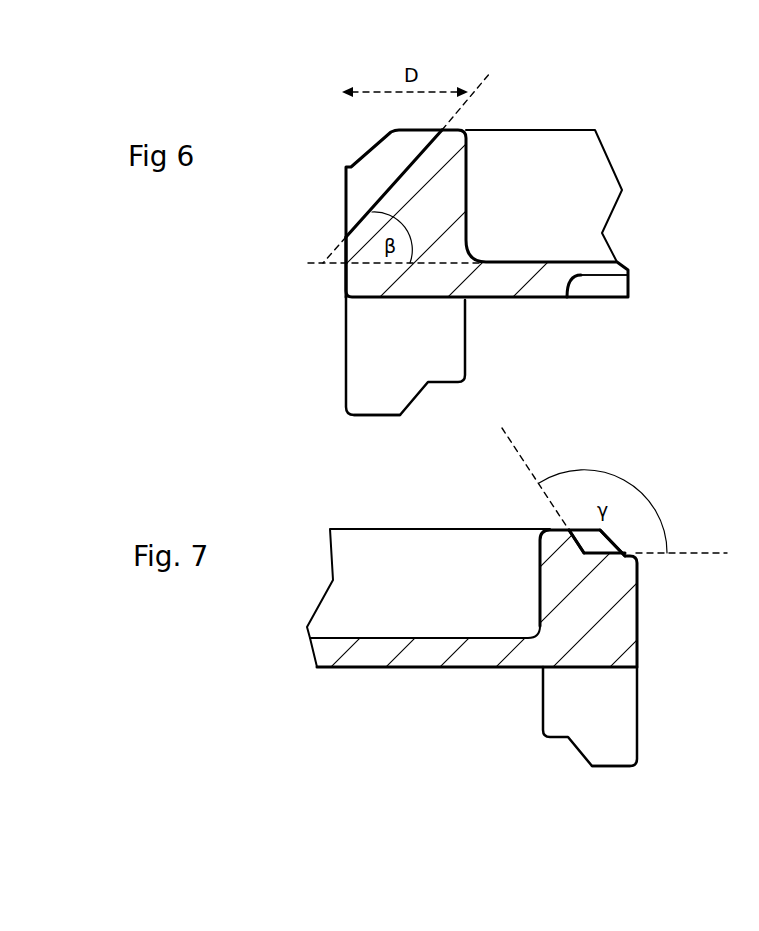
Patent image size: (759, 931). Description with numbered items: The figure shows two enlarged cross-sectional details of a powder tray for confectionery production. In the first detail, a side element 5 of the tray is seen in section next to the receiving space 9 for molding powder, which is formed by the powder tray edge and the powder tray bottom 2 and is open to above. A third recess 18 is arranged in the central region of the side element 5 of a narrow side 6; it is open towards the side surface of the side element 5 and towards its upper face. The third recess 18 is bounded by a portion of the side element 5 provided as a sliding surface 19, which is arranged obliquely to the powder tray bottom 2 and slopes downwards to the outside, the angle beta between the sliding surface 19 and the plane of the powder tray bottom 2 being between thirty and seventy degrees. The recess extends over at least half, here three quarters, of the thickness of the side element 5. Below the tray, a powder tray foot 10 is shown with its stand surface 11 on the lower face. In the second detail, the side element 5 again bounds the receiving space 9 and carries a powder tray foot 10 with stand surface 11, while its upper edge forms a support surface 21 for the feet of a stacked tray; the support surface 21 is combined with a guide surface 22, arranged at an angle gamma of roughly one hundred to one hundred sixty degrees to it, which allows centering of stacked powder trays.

In FIG. 6, the powder tray bottom 2 is at (599, 268).
In FIG. 6, the side element 5 is at (370, 272).
In FIG. 7, the side element 5 is at (615, 627).
In FIG. 6, the narrow side 6 is at (348, 278).
In FIG. 6, the receiving space 9 is at (568, 167).
In FIG. 7, the receiving space 9 is at (473, 605).
In FIG. 6, the powder tray foot 10 is at (442, 357).
In FIG. 7, the powder tray foot 10 is at (618, 730).
In FIG. 6, the stand surface 11 is at (378, 418).
In FIG. 7, the stand surface 11 is at (615, 767).
In FIG. 6, the third recess 18 is at (360, 177).
In FIG. 6, the sliding surface 19 is at (407, 167).
In FIG. 7, the support surface 21 is at (607, 553).
In FIG. 7, the guide surface 22 is at (575, 537).